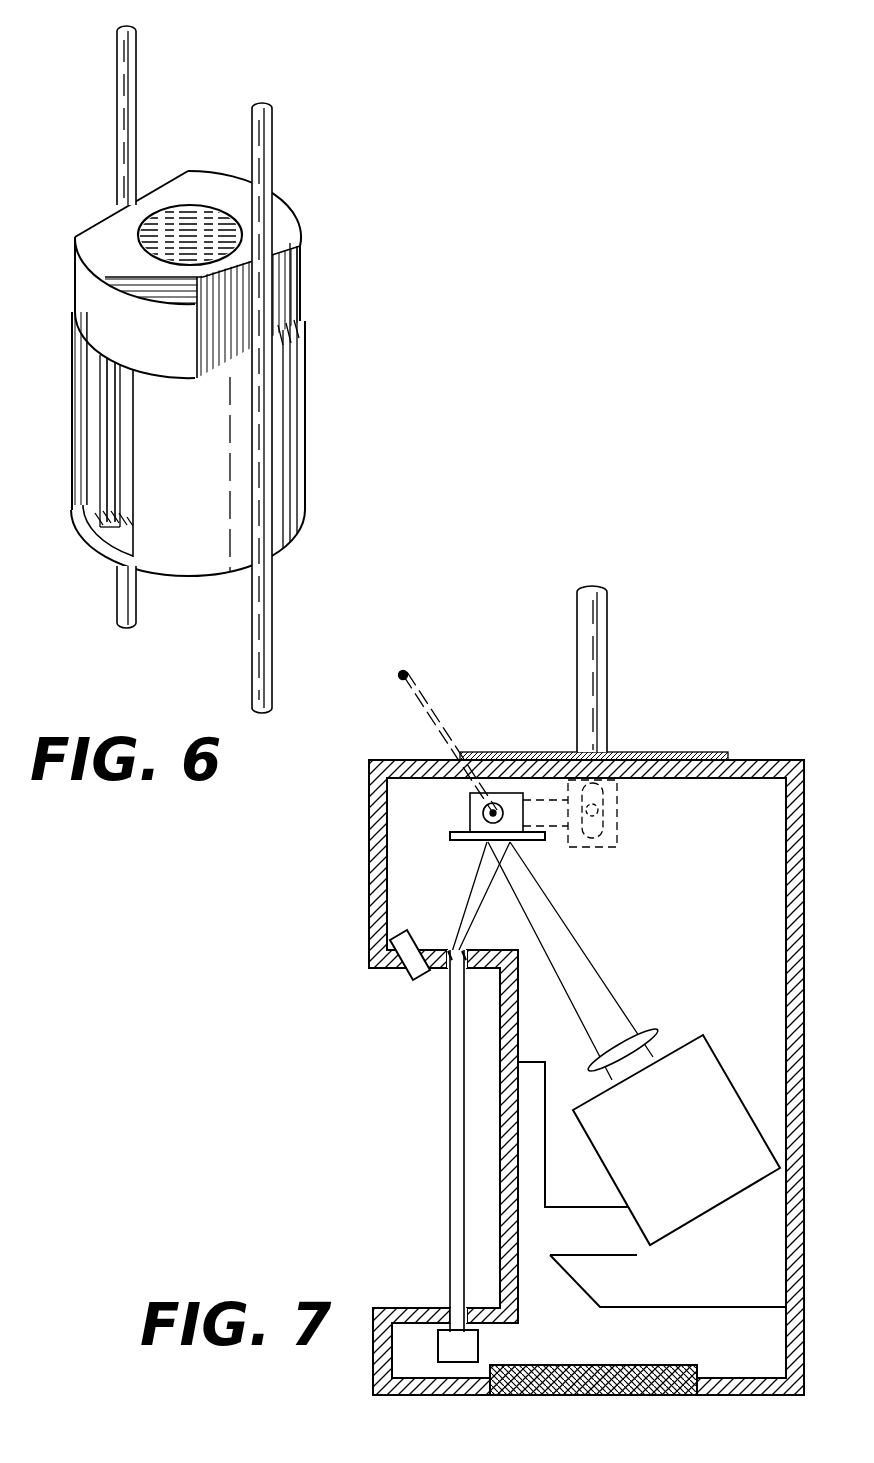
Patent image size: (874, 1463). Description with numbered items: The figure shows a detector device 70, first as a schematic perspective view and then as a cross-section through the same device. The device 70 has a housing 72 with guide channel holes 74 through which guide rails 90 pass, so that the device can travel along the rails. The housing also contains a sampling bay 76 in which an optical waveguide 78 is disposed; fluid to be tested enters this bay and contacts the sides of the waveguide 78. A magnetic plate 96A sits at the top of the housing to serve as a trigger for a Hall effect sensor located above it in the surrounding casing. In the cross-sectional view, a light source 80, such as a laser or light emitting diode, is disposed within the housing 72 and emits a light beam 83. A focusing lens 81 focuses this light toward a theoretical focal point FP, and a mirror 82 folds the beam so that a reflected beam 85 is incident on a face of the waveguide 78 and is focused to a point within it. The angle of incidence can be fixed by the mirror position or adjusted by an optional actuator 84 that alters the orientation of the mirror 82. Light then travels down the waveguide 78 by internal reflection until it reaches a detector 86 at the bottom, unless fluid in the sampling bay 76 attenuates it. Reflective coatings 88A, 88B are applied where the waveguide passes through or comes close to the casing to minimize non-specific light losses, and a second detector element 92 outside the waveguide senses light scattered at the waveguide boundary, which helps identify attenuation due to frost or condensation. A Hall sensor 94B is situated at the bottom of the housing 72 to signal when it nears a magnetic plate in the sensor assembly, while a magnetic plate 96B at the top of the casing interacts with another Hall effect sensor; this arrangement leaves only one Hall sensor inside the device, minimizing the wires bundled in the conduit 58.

In FIG. 6, the detector device 70 is at (338, 287).
In FIG. 7, the detector device 70 is at (822, 776).
In FIG. 6, the housing 72 is at (288, 480).
In FIG. 7, the housing 72 is at (794, 880).
In FIG. 6, the guide channel holes 74 is at (286, 353).
In FIG. 6, the sampling bay 76 is at (95, 418).
In FIG. 7, the sampling bay 76 is at (376, 1053).
In FIG. 6, the optical waveguide 78 is at (105, 468).
In FIG. 7, the optical waveguide 78 is at (452, 1110).
In FIG. 6, the guide rails 90 is at (128, 97).
In FIG. 6, the magnetic plate 96A is at (222, 220).
In FIG. 7, the conduit 58 is at (600, 648).
In FIG. 7, the theoretical focal point FP is at (406, 674).
In FIG. 7, the magnetic plate 96B is at (497, 752).
In FIG. 7, the actuator 84 is at (620, 780).
In FIG. 7, the mirror 82 is at (480, 823).
In FIG. 7, the reflected beam 85 is at (486, 864).
In FIG. 7, the light beam 83 is at (582, 968).
In FIG. 7, the focusing lens 81 is at (645, 1033).
In FIG. 7, the light source 80 is at (690, 1161).
In FIG. 7, the second detector element 92 is at (404, 972).
In FIG. 7, the coating 88A is at (448, 968).
In FIG. 7, the coating 88B is at (448, 1308).
In FIG. 7, the detector 86 is at (470, 1350).
In FIG. 7, the Hall sensor 94B is at (606, 1375).